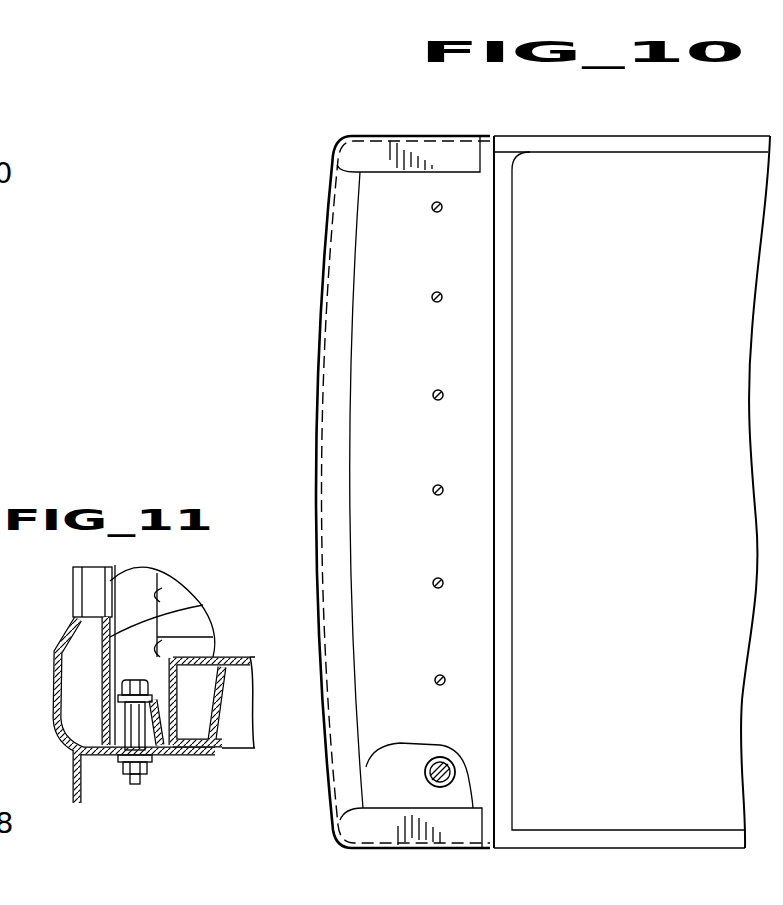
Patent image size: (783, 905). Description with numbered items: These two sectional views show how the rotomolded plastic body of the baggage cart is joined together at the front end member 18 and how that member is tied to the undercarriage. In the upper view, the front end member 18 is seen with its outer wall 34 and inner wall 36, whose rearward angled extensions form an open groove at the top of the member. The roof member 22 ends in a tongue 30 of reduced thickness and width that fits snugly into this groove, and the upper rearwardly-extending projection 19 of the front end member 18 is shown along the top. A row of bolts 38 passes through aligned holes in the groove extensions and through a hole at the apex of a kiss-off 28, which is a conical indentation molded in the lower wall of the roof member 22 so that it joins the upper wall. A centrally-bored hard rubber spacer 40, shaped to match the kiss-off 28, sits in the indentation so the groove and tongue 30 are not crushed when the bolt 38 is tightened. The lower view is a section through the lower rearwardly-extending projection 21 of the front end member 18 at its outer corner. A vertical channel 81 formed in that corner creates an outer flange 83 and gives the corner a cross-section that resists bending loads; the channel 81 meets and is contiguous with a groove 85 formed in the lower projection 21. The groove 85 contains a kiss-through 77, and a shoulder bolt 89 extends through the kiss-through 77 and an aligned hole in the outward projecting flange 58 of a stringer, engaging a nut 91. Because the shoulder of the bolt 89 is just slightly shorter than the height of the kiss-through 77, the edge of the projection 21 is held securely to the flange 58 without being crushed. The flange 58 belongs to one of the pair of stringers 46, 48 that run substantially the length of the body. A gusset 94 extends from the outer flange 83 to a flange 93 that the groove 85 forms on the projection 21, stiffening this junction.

In FIG. 10, the front end member 18 is at (312, 240).
In FIG. 10, the upper rearwardly-extending projection 19 is at (443, 135).
In FIG. 10, the roof member 22 is at (603, 138).
In FIG. 10, the kiss-off 28 is at (463, 785).
In FIG. 10, the tongue 30 is at (372, 210).
In FIG. 10, the outer wall 34 is at (322, 281).
In FIG. 10, the inner wall 36 is at (385, 752).
In FIG. 10, the bolts 38 is at (437, 213).
In FIG. 10, the spacer 40 is at (457, 767).
In FIG. 11, the stringer 46 is at (15, 787).
In FIG. 11, the stringer 48 is at (0, 215).
In FIG. 11, the lower rearwardly-extending projection 21 is at (55, 652).
In FIG. 11, the outward projecting flange 58 is at (208, 755).
In FIG. 11, the kiss-through 77 is at (150, 752).
In FIG. 11, the vertical channel 81 is at (165, 585).
In FIG. 11, the outer flange 83 is at (112, 578).
In FIG. 11, the groove 85 is at (165, 637).
In FIG. 11, the shoulder bolt 89 is at (115, 757).
In FIG. 11, the nut 91 is at (152, 760).
In FIG. 11, the flange 93 is at (200, 618).
In FIG. 11, the gusset 94 is at (85, 578).